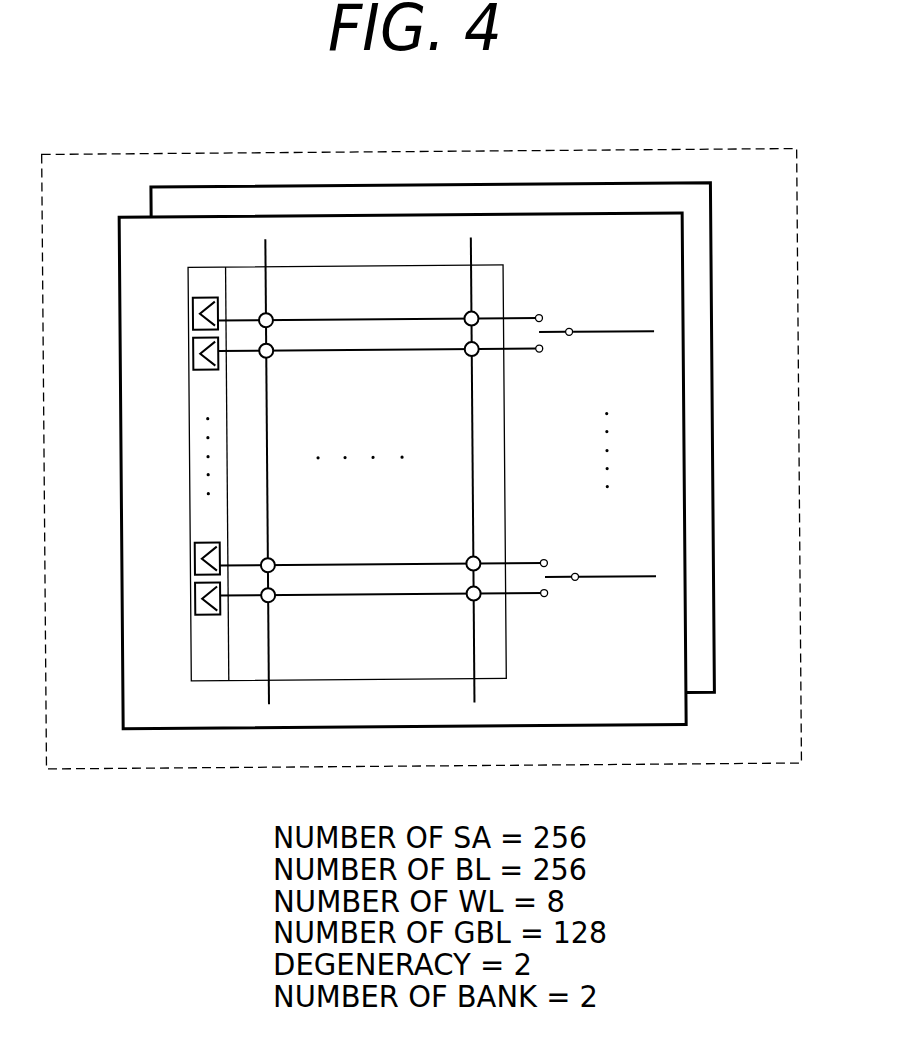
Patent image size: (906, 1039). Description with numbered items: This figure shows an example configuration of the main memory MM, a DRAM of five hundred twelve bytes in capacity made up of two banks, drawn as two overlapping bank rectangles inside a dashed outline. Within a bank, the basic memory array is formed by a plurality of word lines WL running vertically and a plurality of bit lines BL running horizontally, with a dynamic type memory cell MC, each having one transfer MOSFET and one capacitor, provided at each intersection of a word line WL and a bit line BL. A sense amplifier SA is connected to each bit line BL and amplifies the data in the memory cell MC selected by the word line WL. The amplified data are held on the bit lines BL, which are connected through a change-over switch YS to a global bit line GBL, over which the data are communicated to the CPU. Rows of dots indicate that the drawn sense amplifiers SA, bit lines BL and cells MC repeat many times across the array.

The main memory MM is at (422, 459).
The sense amplifier SA is at (193, 315).
The bit line BL is at (393, 318).
The word line WL is at (269, 249).
The dynamic type memory cell MC is at (273, 314).
The global bit line GBL is at (593, 333).
The change-over switch YS is at (573, 337).